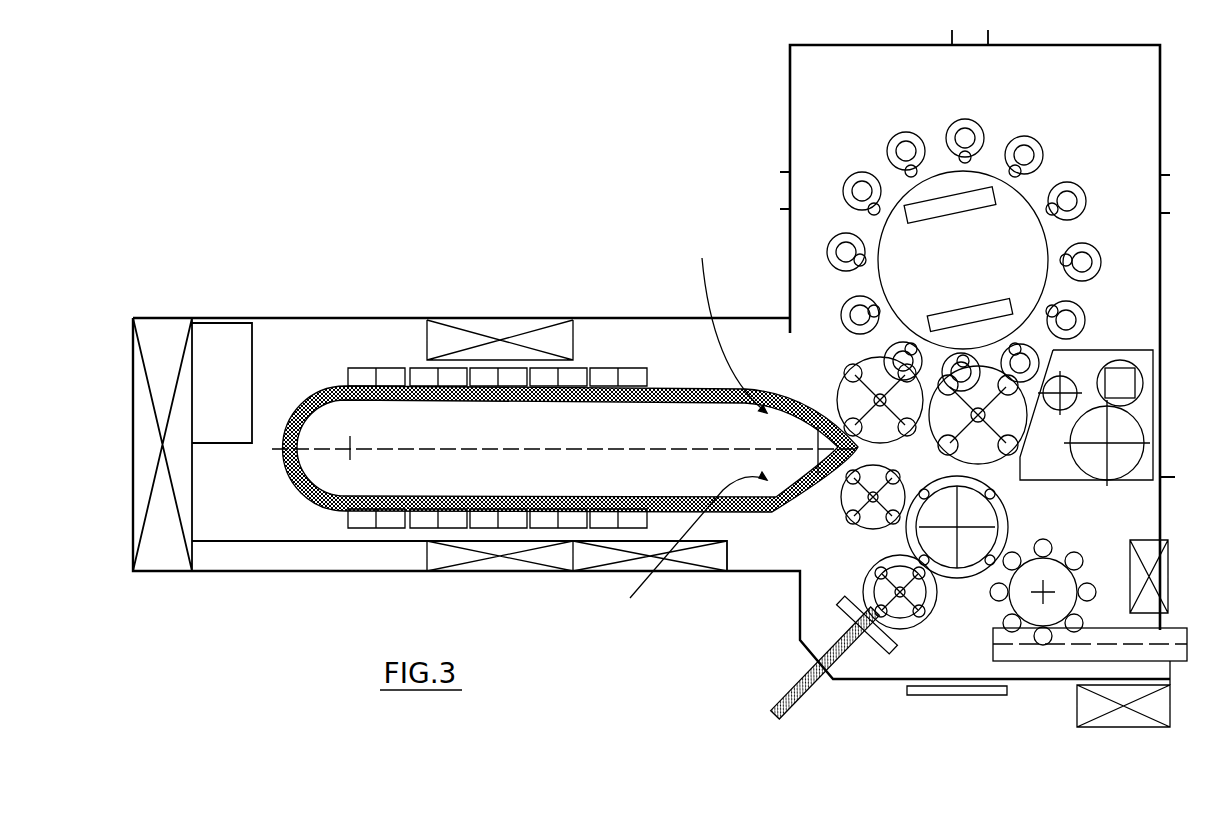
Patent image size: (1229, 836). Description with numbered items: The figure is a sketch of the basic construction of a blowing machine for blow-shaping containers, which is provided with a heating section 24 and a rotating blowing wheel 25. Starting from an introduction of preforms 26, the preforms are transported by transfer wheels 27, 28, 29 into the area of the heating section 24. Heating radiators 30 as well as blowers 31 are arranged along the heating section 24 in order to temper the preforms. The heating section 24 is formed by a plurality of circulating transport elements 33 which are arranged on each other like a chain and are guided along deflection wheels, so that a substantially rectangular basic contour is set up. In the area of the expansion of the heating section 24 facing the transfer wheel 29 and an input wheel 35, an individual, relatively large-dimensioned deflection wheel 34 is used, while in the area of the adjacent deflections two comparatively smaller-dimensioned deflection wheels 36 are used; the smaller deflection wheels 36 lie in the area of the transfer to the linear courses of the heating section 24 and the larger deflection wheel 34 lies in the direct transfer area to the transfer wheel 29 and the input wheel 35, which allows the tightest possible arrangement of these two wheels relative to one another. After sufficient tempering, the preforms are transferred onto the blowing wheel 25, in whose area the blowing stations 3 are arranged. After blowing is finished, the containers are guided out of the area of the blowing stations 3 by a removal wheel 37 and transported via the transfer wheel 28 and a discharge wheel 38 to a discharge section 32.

The blowing station 3 is at (812, 236).
The heating section 24 is at (606, 355).
The blowing wheel 25 is at (902, 187).
The introduction of preforms 26 is at (827, 682).
The transfer wheel 27 is at (913, 635).
The transfer wheel 28 is at (959, 583).
The transfer wheel 29 is at (848, 540).
The heating radiator 30 is at (395, 366).
The blower 31 is at (490, 320).
The discharge section 32 is at (1178, 662).
The transport element 33 is at (328, 506).
The deflection wheel 34 is at (350, 447).
The input wheel 35 is at (878, 343).
The deflection wheel 36 is at (682, 431).
The removal wheel 37 is at (1023, 452).
The discharge wheel 38 is at (1049, 605).